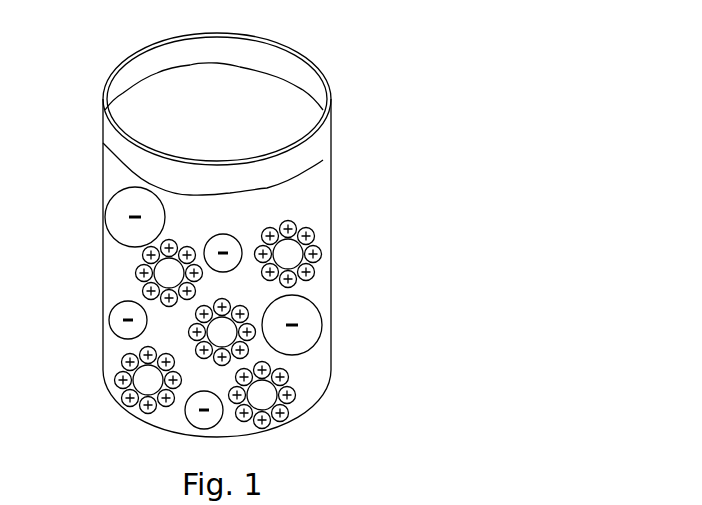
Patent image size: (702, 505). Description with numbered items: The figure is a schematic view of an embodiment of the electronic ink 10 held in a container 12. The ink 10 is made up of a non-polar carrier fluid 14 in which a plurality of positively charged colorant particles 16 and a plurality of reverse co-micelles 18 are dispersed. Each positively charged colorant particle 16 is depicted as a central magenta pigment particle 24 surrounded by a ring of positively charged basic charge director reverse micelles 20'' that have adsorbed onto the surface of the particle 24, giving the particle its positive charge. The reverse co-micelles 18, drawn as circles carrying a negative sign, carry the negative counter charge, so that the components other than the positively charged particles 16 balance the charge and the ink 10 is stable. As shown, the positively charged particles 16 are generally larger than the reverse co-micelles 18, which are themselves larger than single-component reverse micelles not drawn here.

The electronic ink 10 is at (225, 248).
The container 12 is at (332, 153).
The non-polar carrier fluid 14 is at (307, 373).
The positively charged colorant particles 16 is at (225, 336).
The reverse co-micelles 18 is at (110, 318).
The positively charged basic charge director reverse micelles 20'' is at (225, 336).
The particles 24 is at (168, 275).